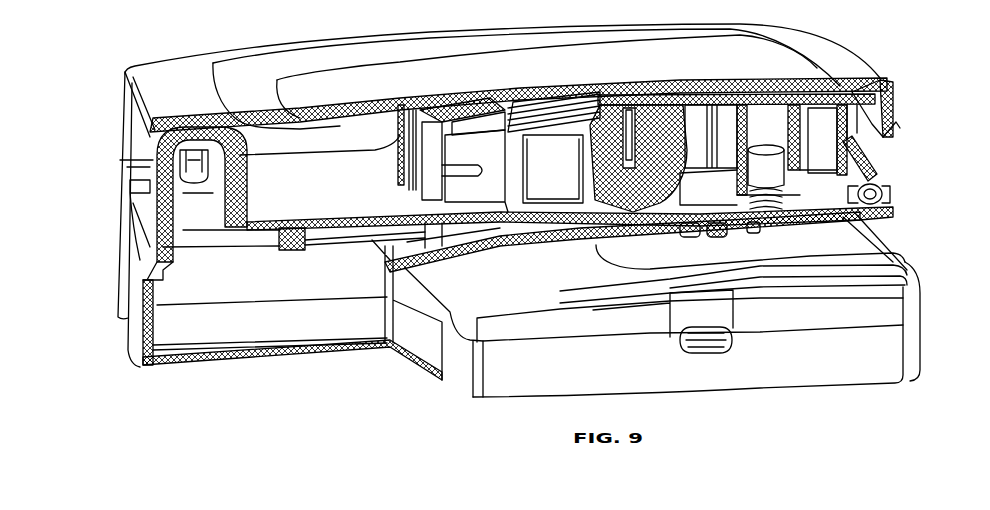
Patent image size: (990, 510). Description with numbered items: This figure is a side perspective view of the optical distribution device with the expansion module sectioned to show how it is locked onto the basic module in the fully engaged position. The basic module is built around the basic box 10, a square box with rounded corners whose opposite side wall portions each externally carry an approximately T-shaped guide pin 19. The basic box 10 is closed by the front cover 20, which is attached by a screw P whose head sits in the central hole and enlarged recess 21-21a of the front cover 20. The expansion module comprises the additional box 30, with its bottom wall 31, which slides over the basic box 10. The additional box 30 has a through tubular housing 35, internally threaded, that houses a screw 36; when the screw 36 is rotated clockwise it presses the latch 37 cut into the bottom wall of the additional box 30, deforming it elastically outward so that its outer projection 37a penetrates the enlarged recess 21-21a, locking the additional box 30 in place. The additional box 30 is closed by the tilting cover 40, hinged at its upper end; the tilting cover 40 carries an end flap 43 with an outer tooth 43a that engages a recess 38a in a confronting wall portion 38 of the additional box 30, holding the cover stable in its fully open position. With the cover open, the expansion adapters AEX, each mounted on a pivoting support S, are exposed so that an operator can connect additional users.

The basic box 10 is at (862, 398).
The guide pin 19 is at (704, 321).
The front cover 20 is at (866, 254).
The central hole and enlarged recess 21-21a is at (713, 238).
The additional box 30 is at (148, 379).
The bottom wall 31 is at (468, 258).
The through tubular housing 35 is at (751, 121).
The screw 36 is at (768, 139).
The latch 37 is at (756, 230).
The outer projection 37a is at (676, 233).
The confronting wall portion 38 is at (863, 141).
The recess 38a is at (868, 155).
The tilting cover 40 is at (381, 57).
The end flap 43 is at (897, 104).
The outer tooth 43a is at (902, 125).
The support S is at (548, 160).
The screw P is at (706, 224).
The expansion adapters AEX is at (434, 199).